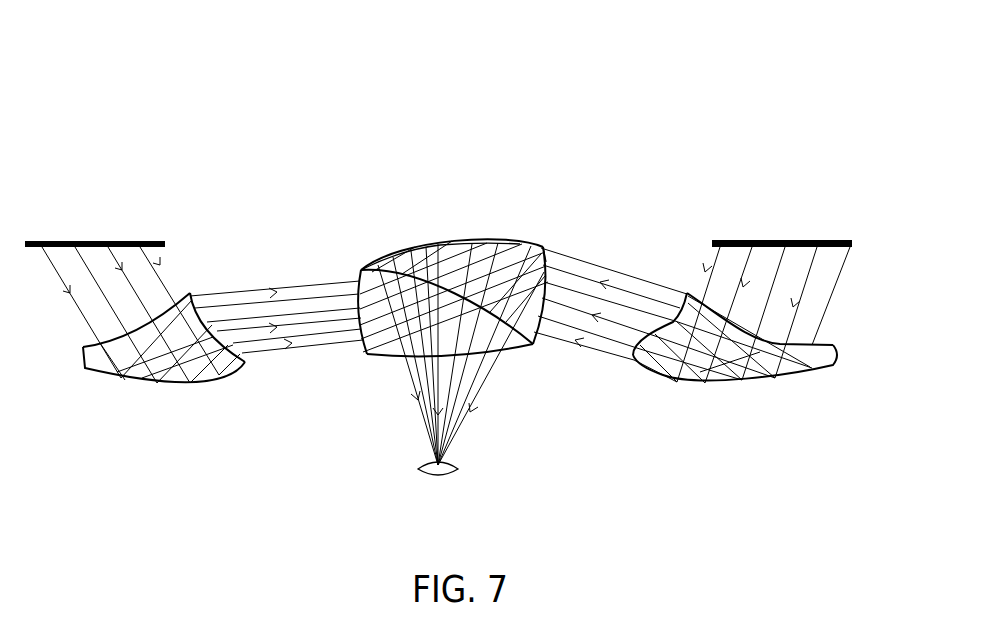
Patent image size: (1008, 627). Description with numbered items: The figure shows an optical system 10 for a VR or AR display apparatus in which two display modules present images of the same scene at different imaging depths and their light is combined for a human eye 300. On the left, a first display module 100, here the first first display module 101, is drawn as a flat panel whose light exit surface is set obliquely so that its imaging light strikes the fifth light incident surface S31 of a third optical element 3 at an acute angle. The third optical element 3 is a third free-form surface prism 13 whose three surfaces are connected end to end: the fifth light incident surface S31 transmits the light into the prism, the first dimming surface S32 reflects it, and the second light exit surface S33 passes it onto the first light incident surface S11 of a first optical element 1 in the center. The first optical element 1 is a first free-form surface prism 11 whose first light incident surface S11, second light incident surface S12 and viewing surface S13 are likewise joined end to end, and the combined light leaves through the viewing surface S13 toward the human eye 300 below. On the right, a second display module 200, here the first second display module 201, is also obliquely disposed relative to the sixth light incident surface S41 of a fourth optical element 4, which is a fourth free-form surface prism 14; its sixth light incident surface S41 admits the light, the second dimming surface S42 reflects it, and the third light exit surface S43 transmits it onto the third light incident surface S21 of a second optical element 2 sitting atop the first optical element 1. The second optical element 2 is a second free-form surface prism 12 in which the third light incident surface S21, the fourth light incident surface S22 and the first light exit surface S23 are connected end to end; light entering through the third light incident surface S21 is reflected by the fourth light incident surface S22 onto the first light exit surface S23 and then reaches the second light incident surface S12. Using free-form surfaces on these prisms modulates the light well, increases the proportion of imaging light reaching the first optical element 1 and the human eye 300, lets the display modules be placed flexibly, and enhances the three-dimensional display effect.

The optical system 10 is at (76, 63).
The first display module 100 is at (207, 203).
The first first display module 101 is at (168, 238).
The second display module 200 is at (803, 193).
The first second display module 201 is at (773, 239).
The first optical element 1 is at (362, 380).
The first free-form surface prism 11 is at (397, 347).
The first light incident surface S11 is at (355, 282).
The second light incident surface S12 is at (531, 348).
The viewing surface S13 is at (512, 358).
The second optical element 2 is at (342, 203).
The second free-form surface prism 12 is at (388, 243).
The third light incident surface S21 is at (557, 253).
The fourth light incident surface S22 is at (533, 242).
The first light exit surface S23 is at (373, 258).
The third optical element 3 is at (118, 405).
The third free-form surface prism 13 is at (165, 368).
The fifth light incident surface S31 is at (100, 342).
The first dimming surface S32 is at (97, 370).
The second light exit surface S33 is at (200, 305).
The fourth optical element 4 is at (707, 428).
The fourth free-form surface prism 14 is at (745, 370).
The sixth light incident surface S41 is at (820, 340).
The second dimming surface S42 is at (682, 383).
The third light exit surface S43 is at (675, 305).
The human eye 300 is at (453, 468).